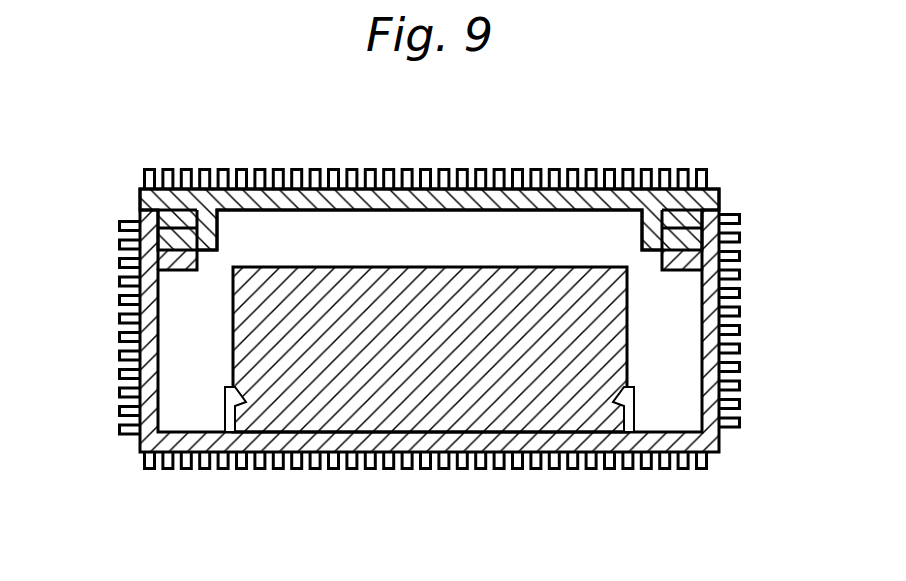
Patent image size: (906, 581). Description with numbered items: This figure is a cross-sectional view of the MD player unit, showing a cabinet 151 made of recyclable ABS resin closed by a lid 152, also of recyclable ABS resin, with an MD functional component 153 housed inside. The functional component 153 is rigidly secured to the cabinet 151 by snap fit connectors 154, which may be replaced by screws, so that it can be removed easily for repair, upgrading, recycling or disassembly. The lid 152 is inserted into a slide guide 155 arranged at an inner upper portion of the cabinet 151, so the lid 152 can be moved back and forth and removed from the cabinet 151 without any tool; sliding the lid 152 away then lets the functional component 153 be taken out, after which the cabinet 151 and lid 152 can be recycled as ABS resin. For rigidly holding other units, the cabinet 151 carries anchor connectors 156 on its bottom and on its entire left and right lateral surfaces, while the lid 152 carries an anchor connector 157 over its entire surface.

The cabinet 151 is at (706, 438).
The lid 152 is at (718, 188).
The MD functional component 153 is at (415, 270).
The snap fit connectors 154 is at (225, 414).
The slide guide 155 is at (200, 259).
The anchor connectors 156 is at (750, 210).
The anchor connector 157 is at (719, 158).